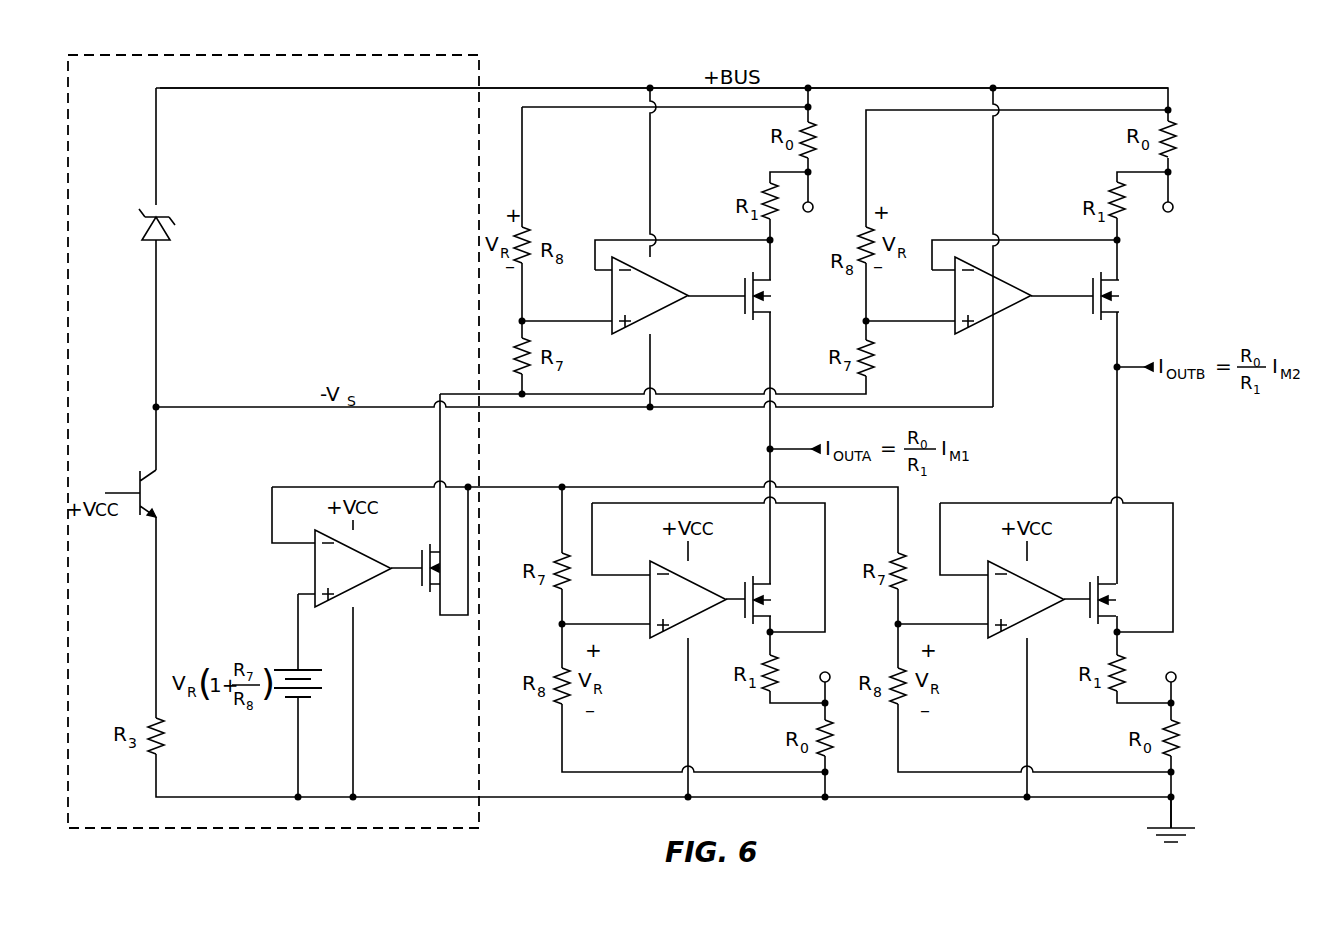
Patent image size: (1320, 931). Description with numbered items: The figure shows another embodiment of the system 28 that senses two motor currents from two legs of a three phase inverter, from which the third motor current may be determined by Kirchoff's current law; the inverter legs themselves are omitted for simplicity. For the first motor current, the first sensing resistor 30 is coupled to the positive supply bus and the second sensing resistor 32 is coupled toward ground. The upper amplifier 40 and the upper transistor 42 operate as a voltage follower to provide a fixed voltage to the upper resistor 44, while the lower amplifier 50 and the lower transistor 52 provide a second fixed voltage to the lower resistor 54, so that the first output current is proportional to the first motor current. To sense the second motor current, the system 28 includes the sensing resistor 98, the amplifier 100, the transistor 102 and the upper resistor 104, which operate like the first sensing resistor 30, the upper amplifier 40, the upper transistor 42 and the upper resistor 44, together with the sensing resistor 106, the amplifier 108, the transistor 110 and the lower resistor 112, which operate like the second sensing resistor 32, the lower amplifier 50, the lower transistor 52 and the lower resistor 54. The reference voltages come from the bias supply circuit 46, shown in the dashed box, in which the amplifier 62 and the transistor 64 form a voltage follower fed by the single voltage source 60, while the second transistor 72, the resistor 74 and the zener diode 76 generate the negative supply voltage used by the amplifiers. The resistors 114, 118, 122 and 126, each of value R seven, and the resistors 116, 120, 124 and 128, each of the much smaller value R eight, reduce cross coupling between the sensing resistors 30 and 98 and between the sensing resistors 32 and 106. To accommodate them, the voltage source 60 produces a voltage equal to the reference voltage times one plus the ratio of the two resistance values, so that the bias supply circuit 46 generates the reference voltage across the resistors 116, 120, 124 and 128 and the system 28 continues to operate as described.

The system 28 is at (878, 60).
The first sensing resistor 30 is at (816, 132).
The second sensing resistor 32 is at (832, 735).
The upper amplifier 40 is at (668, 317).
The upper transistor 42 is at (751, 311).
The upper resistor 44 is at (762, 190).
The bias supply circuit 46 is at (110, 108).
The lower amplifier 50 is at (673, 636).
The lower transistor 52 is at (744, 612).
The lower resistor 54 is at (782, 668).
The voltage source 60 is at (298, 668).
The amplifier 62 is at (353, 586).
The transistor 64 is at (421, 556).
The second transistor 72 is at (140, 472).
The resistor 74 is at (162, 751).
The diode 76 is at (173, 232).
The sensing resistor 98 is at (1178, 140).
The amplifier 100 is at (1001, 313).
The transistor 102 is at (1092, 284).
The upper resistor 104 is at (1108, 193).
The sensing resistor 106 is at (1180, 735).
The amplifier 108 is at (1010, 636).
The transistor 110 is at (1089, 612).
The lower resistor 112 is at (1128, 668).
The resistor 114 is at (527, 371).
The resistor 116 is at (526, 230).
The resistor 118 is at (871, 370).
The resistor 120 is at (868, 225).
The resistor 122 is at (560, 556).
The resistor 124 is at (560, 669).
The resistor 126 is at (896, 556).
The resistor 128 is at (896, 669).